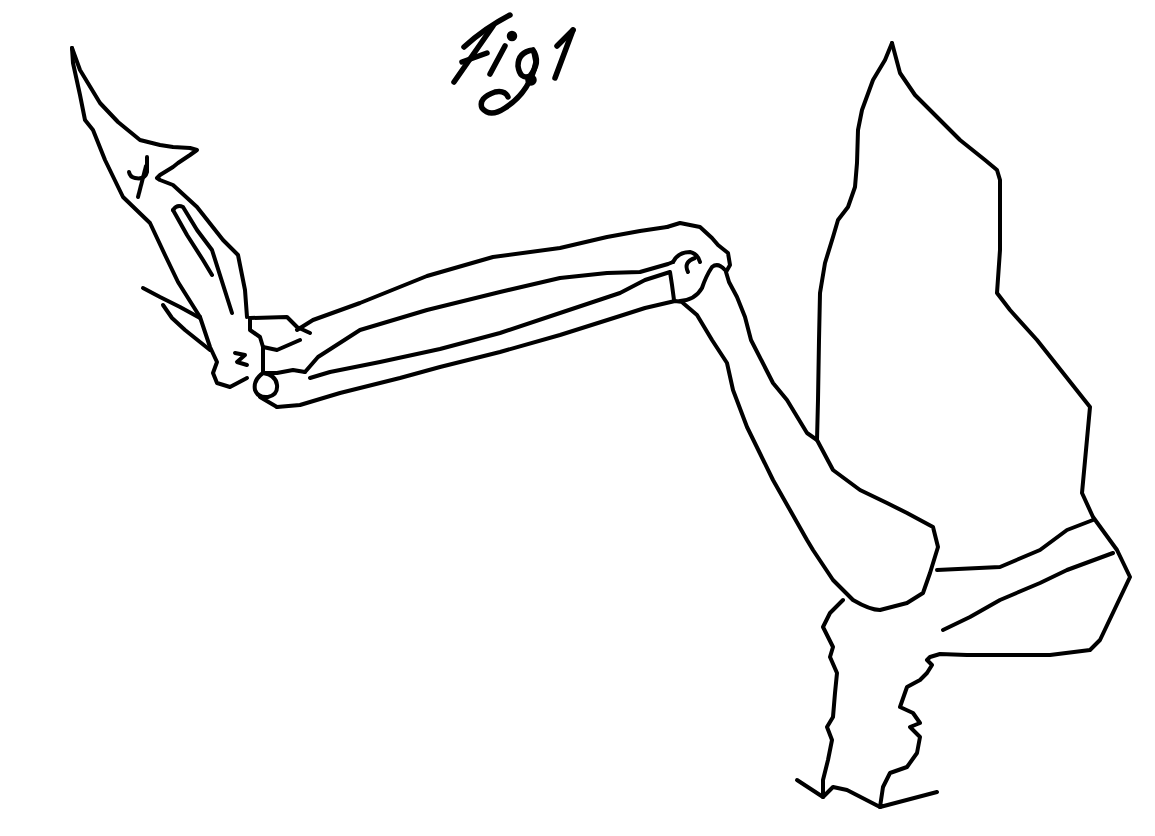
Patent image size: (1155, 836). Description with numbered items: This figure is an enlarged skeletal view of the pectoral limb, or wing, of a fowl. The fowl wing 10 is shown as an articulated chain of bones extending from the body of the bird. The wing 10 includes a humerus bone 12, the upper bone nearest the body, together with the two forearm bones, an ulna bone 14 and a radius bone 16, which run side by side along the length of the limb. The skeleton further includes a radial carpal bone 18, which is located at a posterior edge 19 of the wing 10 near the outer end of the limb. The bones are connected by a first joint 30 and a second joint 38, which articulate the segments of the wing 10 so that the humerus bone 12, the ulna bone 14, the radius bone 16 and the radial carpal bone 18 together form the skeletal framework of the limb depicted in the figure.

The fowl wing 10 is at (652, 158).
The humerus bone 12 is at (813, 548).
The ulna bone 14 is at (493, 255).
The radius bone 16 is at (493, 353).
The radial carpal bone 18 is at (257, 397).
The posterior edge 19 is at (232, 234).
The first joint 30 is at (712, 238).
The second joint 38 is at (240, 378).